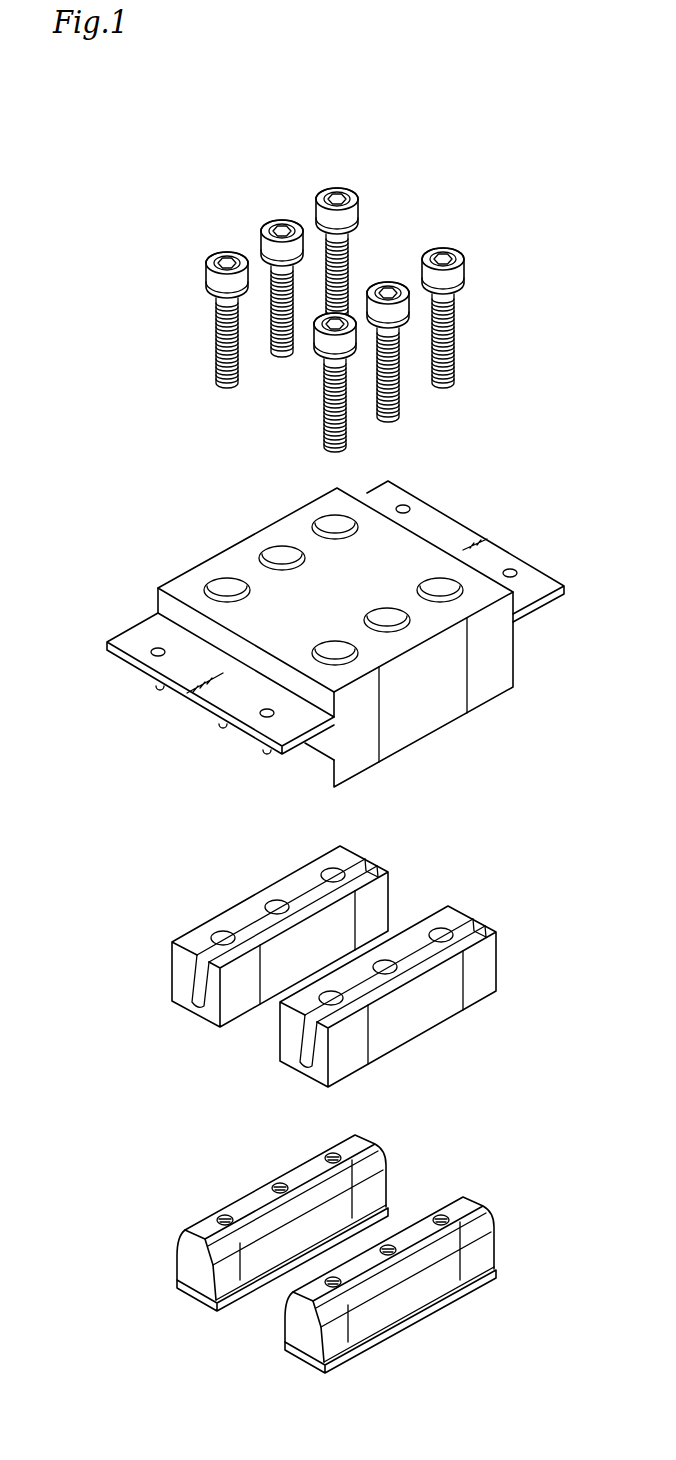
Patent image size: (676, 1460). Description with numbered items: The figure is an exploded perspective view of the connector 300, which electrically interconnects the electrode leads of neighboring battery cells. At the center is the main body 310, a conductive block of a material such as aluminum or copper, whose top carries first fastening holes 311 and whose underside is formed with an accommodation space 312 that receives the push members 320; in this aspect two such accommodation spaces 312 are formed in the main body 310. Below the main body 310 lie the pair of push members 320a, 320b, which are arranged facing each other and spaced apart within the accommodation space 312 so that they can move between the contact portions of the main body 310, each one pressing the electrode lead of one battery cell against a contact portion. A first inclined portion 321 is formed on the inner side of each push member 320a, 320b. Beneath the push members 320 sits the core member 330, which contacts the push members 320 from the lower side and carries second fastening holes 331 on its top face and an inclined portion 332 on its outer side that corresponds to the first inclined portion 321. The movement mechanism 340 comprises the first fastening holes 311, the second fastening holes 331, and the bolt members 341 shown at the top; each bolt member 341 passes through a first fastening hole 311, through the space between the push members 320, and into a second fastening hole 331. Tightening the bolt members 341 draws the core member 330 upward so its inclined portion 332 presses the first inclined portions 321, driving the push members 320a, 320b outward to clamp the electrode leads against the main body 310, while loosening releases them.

The connector 300 is at (124, 182).
The main body 310 is at (485, 495).
The first fastening hole 311 is at (226, 588).
The accommodation space 312 is at (310, 757).
The push members 320 is at (432, 857).
The push member 320a is at (176, 967).
The push member 320b is at (237, 997).
The first inclined portion 321 is at (186, 998).
The core member 330 is at (418, 1136).
The second fastening hole 331 is at (223, 1217).
The inclined portion 332 is at (178, 1246).
The movement mechanism 340 is at (458, 204).
The bolt member 341 is at (466, 276).